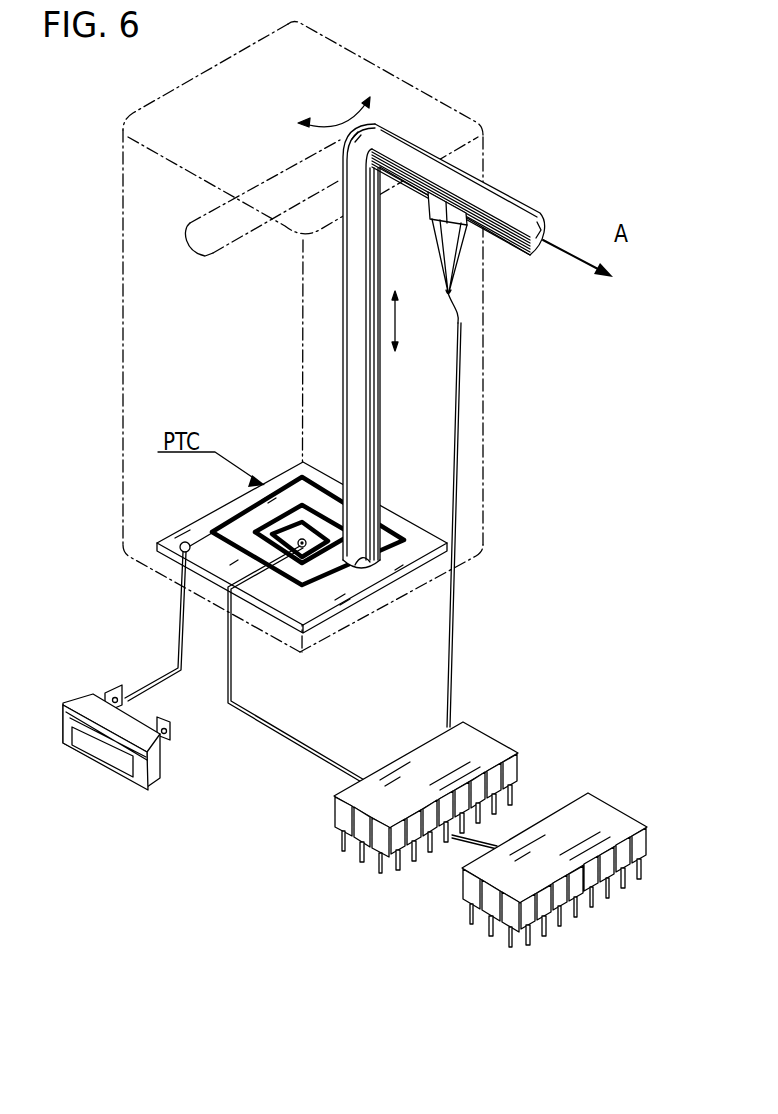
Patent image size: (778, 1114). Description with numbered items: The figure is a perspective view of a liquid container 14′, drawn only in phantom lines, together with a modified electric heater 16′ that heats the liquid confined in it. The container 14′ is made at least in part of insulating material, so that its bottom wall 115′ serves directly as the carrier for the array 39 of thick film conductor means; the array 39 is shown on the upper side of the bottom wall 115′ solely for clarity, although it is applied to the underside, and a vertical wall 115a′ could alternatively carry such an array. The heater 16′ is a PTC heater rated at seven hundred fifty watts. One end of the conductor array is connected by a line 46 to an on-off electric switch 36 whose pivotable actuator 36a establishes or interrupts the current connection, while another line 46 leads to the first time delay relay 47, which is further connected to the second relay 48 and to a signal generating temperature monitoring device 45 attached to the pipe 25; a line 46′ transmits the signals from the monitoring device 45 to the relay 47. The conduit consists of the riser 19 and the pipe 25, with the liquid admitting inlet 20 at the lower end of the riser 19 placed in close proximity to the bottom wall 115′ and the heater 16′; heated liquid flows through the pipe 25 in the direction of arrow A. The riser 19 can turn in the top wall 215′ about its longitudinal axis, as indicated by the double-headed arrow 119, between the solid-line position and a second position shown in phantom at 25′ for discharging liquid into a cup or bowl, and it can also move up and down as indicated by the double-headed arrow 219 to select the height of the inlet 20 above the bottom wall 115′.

The double-headed arrow 119 is at (344, 125).
The top wall 215′ is at (433, 104).
The second position of the pipe 25′ is at (250, 190).
The pipe 25 is at (493, 203).
The temperature monitoring device 45 is at (468, 248).
The double-headed arrow 219 is at (397, 330).
The riser 19 is at (357, 420).
The electric heater 16′ is at (408, 512).
The container 14′ is at (483, 422).
The vertical wall 115a′ is at (470, 494).
The line 46′ is at (455, 603).
The bottom wall 115′ is at (143, 572).
The line 46 is at (173, 633).
The pivotable actuator 36a is at (80, 763).
The on-off electric switch 36 is at (117, 793).
The liquid admitting inlet 20 is at (361, 563).
The array of thick film conductor means 39 is at (397, 562).
The first time delay relay 47 is at (337, 863).
The second relay 48 is at (460, 928).